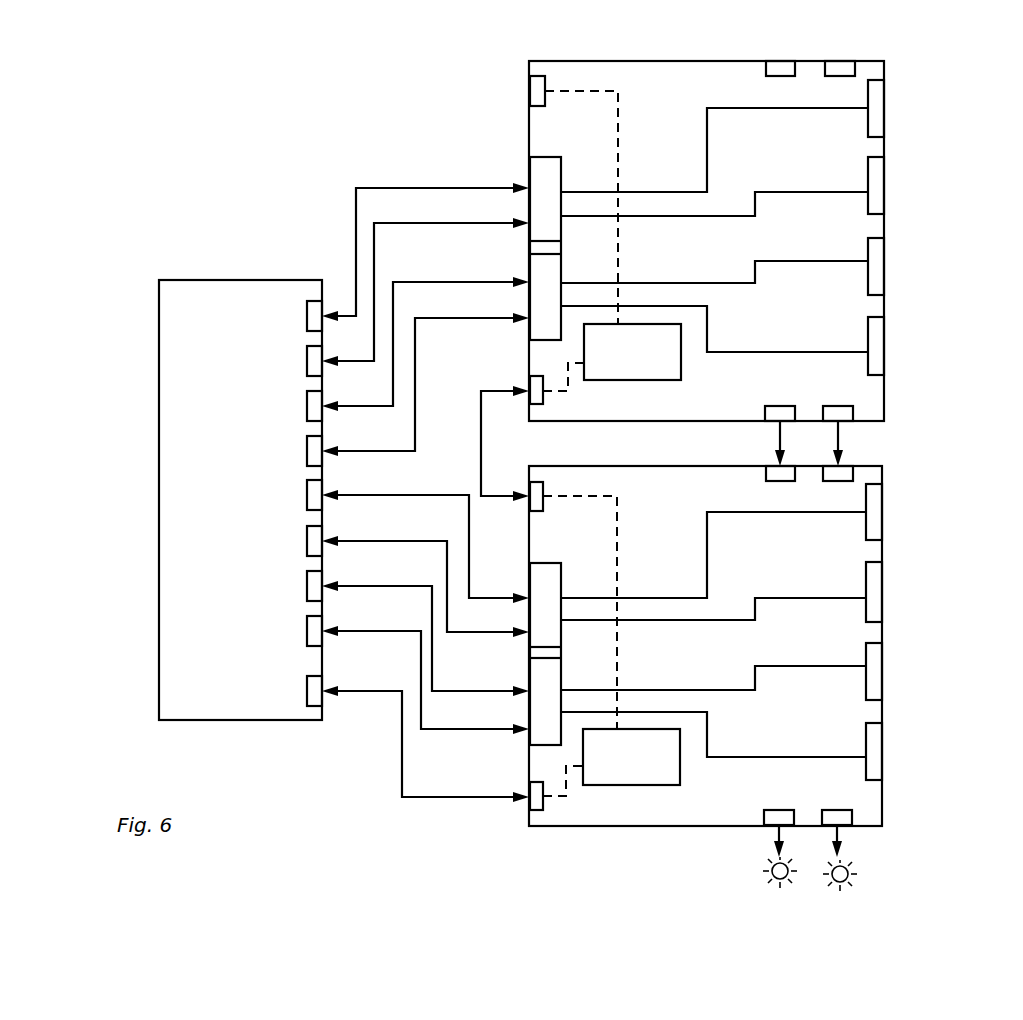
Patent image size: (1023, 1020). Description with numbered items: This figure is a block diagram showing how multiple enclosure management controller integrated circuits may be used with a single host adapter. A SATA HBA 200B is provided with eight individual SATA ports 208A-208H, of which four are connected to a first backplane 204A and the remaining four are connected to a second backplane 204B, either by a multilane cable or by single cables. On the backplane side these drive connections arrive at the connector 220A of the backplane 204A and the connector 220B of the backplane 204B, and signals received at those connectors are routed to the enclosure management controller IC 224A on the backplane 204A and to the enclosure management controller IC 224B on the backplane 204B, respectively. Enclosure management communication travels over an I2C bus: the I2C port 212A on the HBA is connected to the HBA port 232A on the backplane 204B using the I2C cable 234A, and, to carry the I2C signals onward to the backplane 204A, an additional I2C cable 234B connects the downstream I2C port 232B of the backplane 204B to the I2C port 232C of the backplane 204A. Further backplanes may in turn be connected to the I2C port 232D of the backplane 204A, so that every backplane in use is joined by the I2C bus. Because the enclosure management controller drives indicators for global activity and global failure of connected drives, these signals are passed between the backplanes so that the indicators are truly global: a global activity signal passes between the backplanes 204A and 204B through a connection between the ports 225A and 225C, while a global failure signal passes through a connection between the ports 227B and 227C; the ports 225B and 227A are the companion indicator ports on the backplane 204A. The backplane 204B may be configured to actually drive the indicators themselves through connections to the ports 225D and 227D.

The SATA HBA 200B is at (168, 720).
The backplane 204A is at (921, 265).
The backplane 204B is at (915, 658).
The SATA port 208A is at (307, 318).
The SATA port 208H is at (307, 634).
The I2C port 212A is at (307, 690).
The multilane connector 220A is at (530, 160).
The multilane connector 220B is at (530, 746).
The enclosure management controller IC 224A is at (665, 382).
The enclosure management controller IC 224B is at (665, 786).
The port 225A is at (776, 62).
The port 225B is at (770, 418).
The port 225C is at (770, 481).
The port 225D is at (768, 826).
The port 227A is at (846, 62).
The port 227B is at (836, 408).
The port 227C is at (855, 470).
The port 227D is at (848, 826).
The HBA port 232A is at (532, 812).
The downstream I2C port 232B is at (532, 512).
The I2C port 232C is at (534, 405).
The I2C port 232D is at (530, 92).
The I2C cable 234A is at (402, 800).
The I2C cable 234B is at (493, 388).